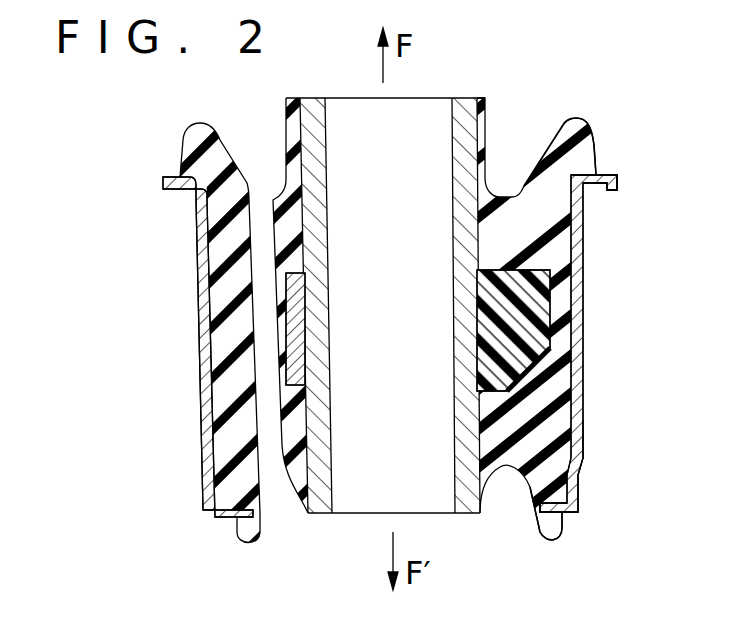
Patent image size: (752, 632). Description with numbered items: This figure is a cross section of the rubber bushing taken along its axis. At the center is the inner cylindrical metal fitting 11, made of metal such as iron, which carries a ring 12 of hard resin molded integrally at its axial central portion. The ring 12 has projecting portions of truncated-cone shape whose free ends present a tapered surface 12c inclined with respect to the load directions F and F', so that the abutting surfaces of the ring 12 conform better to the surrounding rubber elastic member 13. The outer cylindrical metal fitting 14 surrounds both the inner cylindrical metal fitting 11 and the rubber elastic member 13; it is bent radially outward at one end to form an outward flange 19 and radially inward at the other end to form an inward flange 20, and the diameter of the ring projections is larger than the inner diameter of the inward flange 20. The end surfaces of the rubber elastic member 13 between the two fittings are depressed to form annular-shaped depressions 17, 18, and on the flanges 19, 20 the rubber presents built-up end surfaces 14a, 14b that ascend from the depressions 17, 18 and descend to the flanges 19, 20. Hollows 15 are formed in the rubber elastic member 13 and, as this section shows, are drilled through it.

The inner cylindrical metal fitting 11 is at (466, 100).
The ring 12 is at (583, 295).
The tapered surface 12c is at (545, 270).
The rubber elastic member 13 is at (588, 427).
The outer cylindrical metal fitting 14 is at (583, 327).
The built-up end surface 14a is at (580, 132).
The built-up end surface 14b is at (530, 532).
The hollow 15 is at (268, 366).
The annular-shaped depression 17 is at (596, 168).
The annular-shaped depression 18 is at (540, 490).
The outward flange 19 is at (620, 188).
The inward flange 20 is at (560, 515).